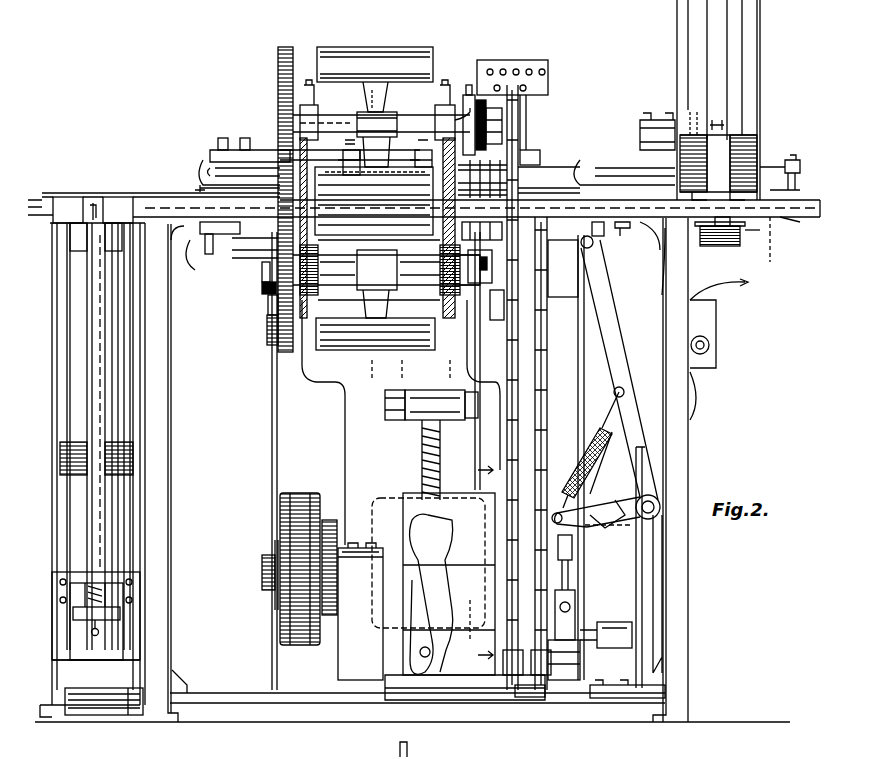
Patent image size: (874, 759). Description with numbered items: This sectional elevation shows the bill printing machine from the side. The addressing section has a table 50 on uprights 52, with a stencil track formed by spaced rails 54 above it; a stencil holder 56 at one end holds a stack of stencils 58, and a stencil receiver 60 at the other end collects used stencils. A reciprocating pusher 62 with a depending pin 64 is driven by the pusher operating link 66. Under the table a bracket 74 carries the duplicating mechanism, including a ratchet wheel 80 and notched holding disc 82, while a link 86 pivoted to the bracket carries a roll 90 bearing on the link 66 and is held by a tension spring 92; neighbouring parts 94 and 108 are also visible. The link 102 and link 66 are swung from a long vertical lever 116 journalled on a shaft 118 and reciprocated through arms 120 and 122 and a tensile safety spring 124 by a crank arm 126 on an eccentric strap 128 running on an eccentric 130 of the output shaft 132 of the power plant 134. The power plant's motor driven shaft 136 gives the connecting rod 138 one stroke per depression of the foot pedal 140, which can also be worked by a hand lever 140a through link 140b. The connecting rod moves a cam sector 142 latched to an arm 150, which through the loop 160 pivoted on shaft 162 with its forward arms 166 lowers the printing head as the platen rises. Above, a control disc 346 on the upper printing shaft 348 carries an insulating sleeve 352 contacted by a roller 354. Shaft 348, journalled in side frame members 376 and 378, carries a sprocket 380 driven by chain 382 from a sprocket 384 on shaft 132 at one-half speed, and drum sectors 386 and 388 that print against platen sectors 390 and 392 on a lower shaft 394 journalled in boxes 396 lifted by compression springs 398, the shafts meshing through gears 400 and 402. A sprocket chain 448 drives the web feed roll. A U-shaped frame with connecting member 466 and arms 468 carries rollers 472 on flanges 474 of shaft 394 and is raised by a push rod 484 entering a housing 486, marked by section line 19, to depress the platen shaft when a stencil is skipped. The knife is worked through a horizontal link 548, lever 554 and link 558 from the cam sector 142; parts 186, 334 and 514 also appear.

The section line 19 is at (494, 569).
The table 50 is at (808, 208).
The uprights 52 is at (678, 418).
The rails 54 is at (162, 192).
The stencil holder 56 is at (760, 98).
The stencils 58 is at (748, 157).
The stencil receiver 60 is at (64, 307).
The reciprocating pusher 62 is at (773, 253).
The depending pin 64 is at (772, 232).
The pusher operating link 66 is at (790, 219).
The bracket 74 is at (700, 255).
The ratchet wheel 80 is at (740, 240).
The notched holding disc 82 is at (721, 280).
The link 86 is at (660, 230).
The roll 90 is at (732, 224).
The tension spring 92 is at (630, 230).
The block 94 is at (715, 248).
The link 102 is at (680, 262).
The bracket 108 is at (605, 240).
The long vertical lever 116 is at (612, 348).
The shaft 118 is at (662, 502).
The arm 120 is at (642, 480).
The arm 122 is at (604, 512).
The tensile safety spring 124 is at (588, 440).
The crank arm 126 is at (618, 535).
The eccentric strap 128 is at (575, 612).
The eccentric 130 is at (582, 628).
The output shaft 132 is at (630, 650).
The power plant 134 is at (455, 670).
The motor driven shaft 136 is at (262, 568).
The connecting rod 138 is at (420, 470).
The foot pedal 140 is at (530, 698).
The hand levers 140a is at (636, 258).
The link 140b is at (590, 402).
The cam sector 142 is at (466, 410).
The arm 150 is at (392, 420).
The loop 160 is at (255, 150).
The shaft 162 is at (230, 168).
The forwardly extended arms 166 is at (432, 160).
The comb 186 is at (522, 180).
The pin 334 is at (275, 188).
The disc 346 is at (492, 110).
The upper printing shaft 348 is at (466, 120).
The insulating sleeve 352 is at (540, 128).
The roller 354 is at (482, 110).
The side frame member 376 is at (513, 250).
The side frame member 378 is at (275, 225).
The sprocket 380 is at (522, 95).
The chain 382 is at (520, 340).
The sprocket 384 is at (510, 625).
The drum sector 386 is at (230, 145).
The drum sector 388 is at (404, 78).
The platen sector 390 is at (278, 255).
The platen sector 392 is at (370, 360).
The lower shaft 394 is at (350, 320).
The boxes 396 is at (264, 290).
The compression springs 398 is at (276, 312).
The gear 400 is at (277, 57).
The gear 402 is at (277, 330).
The sprocket chain 448 is at (548, 362).
The intermediate connecting member 466 is at (270, 298).
The spaced parallel arms 468 is at (385, 295).
The rollers 472 is at (430, 262).
The circular flanges 474 is at (435, 320).
The vertical push rod 484 is at (478, 438).
The housing 486 is at (478, 630).
The arm 514 is at (456, 118).
The horizontal link 548 is at (505, 262).
The lever 554 is at (505, 280).
The link 558 is at (504, 310).